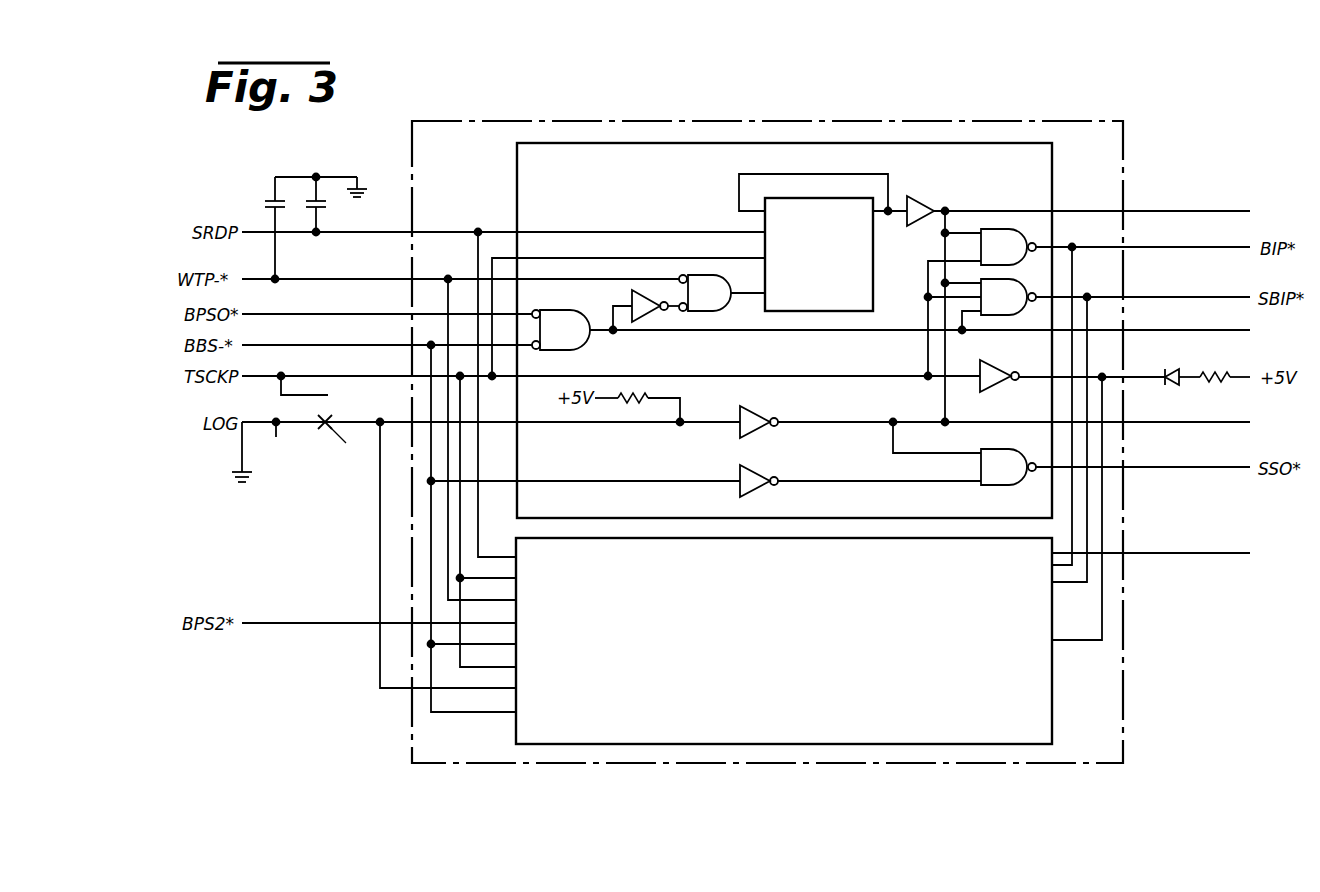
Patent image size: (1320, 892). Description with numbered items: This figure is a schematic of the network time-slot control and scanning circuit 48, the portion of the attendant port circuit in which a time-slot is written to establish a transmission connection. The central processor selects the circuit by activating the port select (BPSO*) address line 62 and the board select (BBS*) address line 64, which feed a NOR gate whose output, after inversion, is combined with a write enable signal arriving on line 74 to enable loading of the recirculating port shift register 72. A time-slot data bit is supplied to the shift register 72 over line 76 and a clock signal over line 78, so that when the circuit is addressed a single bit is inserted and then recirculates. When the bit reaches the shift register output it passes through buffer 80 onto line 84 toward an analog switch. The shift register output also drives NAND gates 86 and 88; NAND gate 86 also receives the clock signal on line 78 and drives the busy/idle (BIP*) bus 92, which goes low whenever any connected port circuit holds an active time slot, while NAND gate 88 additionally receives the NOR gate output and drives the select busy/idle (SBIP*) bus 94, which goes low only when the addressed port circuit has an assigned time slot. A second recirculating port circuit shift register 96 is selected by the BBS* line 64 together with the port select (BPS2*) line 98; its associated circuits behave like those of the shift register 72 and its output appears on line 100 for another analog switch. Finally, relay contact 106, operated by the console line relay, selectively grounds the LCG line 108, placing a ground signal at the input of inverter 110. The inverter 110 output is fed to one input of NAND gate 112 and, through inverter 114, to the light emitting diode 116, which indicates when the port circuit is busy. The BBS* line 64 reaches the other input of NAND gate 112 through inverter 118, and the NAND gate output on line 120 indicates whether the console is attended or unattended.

The network time-slot control and scanning circuit 48 is at (767, 412).
The port select (BPSO*) address line 62 is at (352, 315).
The board select (BBS*) address line 64 is at (351, 346).
The recirculating port shift register 72 is at (864, 263).
The write enable line 74 is at (348, 280).
The time-slot data bit line 76 is at (361, 233).
The clock signal line 78 is at (352, 377).
The buffer 80 is at (914, 201).
The output line 84 is at (1172, 212).
The NAND gate 86 is at (1008, 247).
The NAND gate 88 is at (1008, 297).
The busy/idle (BIP*) bus 92 is at (1178, 249).
The select busy/idle (SBIP*) bus 94 is at (1175, 298).
The second recirculating port circuit shift register 96 is at (814, 641).
The port select (BPS2*) line 98 is at (312, 623).
The output line 100 is at (1169, 555).
The relay contact 106 is at (343, 442).
The line (LCG) 108 is at (282, 444).
The inverter 110 is at (752, 425).
The NAND gate 112 is at (1008, 467).
The inverter 114 is at (992, 370).
The light emitting diode 116 is at (1178, 372).
The inverter 118 is at (752, 484).
The output line 120 is at (1173, 469).